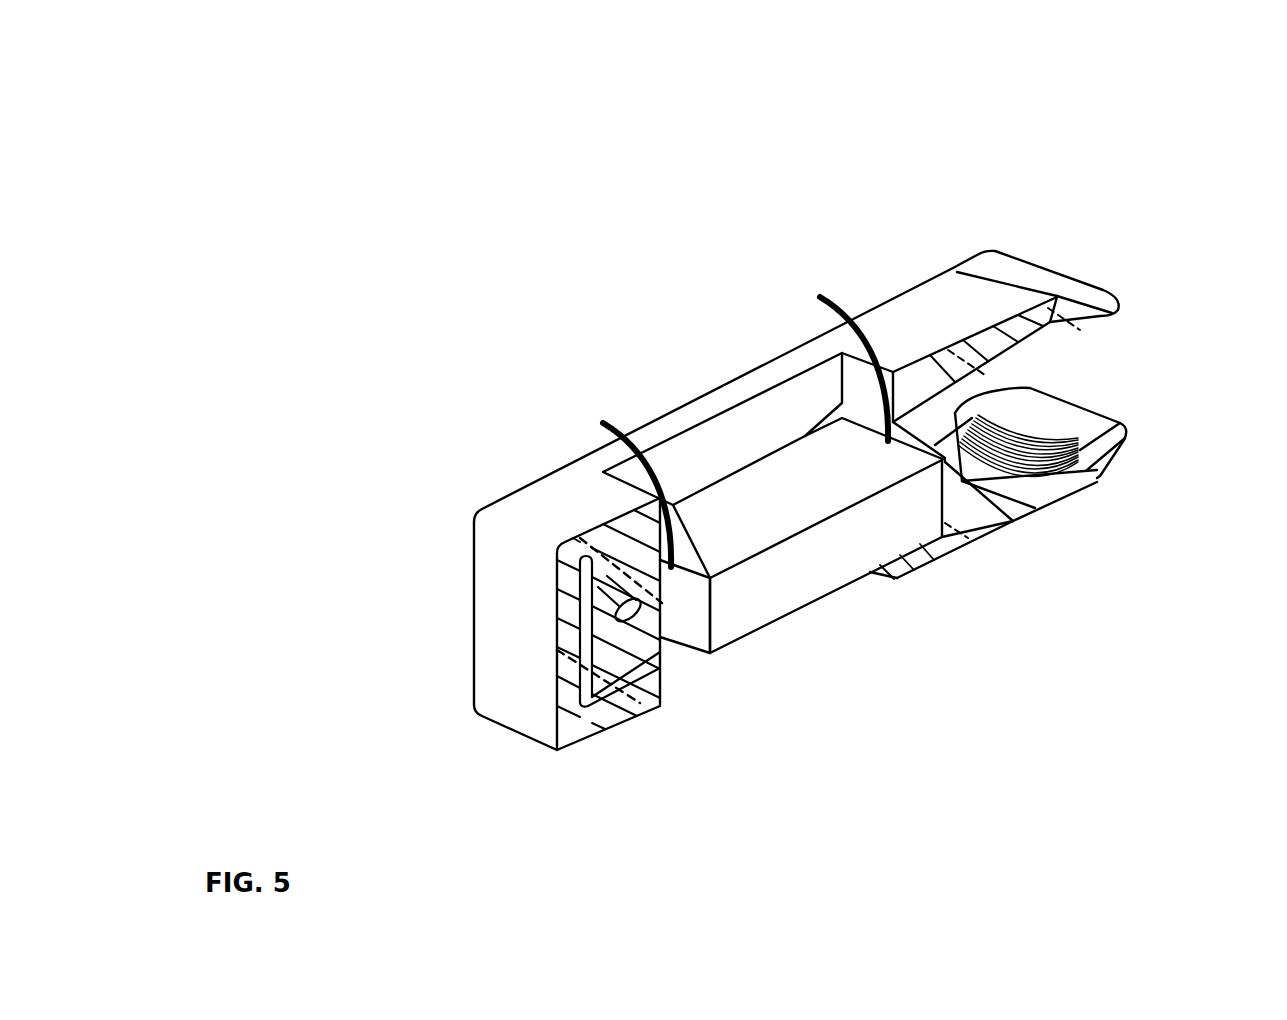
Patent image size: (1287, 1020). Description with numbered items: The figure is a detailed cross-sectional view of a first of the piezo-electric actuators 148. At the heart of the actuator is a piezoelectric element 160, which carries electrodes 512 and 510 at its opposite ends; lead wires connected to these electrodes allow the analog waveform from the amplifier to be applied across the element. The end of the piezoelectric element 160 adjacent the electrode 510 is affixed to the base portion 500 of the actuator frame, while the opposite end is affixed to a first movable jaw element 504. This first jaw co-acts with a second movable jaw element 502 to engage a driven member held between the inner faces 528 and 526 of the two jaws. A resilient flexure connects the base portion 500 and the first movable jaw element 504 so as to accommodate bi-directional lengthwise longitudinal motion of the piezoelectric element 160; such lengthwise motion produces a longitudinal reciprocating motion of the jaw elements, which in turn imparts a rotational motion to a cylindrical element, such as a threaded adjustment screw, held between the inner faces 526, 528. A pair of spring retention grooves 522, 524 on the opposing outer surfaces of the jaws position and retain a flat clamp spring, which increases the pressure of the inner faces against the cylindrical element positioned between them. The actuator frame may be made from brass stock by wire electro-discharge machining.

The piezo-electric actuator 148 is at (1075, 192).
The second movable jaw element 502 is at (896, 322).
The end block 500 is at (525, 630).
The electrode 510 is at (700, 607).
The electrode 512 is at (942, 553).
The piezoelectric element 160 is at (810, 567).
The first movable jaw element 504 is at (1018, 525).
The spring retention groove 522 is at (988, 270).
The spring retention groove 524 is at (1045, 496).
The inner face 526 is at (1040, 346).
The inner face 528 is at (1093, 482).